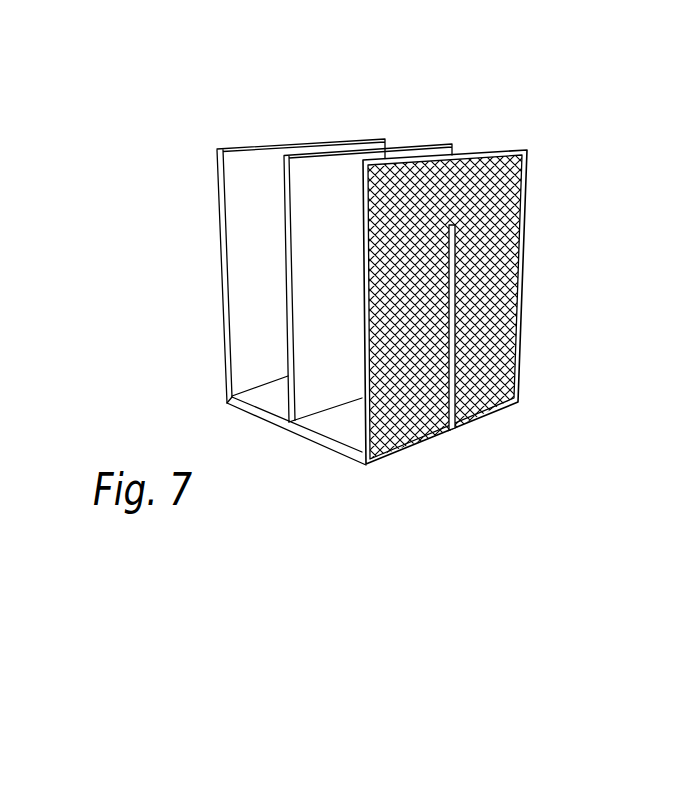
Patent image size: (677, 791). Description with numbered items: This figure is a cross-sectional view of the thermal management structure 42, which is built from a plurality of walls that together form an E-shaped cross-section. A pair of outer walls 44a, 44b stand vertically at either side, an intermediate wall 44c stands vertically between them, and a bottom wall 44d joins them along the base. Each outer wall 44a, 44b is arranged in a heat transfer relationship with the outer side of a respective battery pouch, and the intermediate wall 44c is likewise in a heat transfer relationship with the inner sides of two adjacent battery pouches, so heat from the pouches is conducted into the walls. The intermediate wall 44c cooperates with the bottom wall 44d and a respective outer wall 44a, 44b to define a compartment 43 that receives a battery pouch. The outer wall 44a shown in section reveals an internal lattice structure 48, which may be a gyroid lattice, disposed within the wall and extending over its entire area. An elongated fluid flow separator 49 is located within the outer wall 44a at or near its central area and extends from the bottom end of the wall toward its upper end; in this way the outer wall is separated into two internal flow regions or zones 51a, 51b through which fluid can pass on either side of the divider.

The thermal management structure 42 is at (303, 123).
The compartment 43 is at (250, 245).
The outer wall 44a is at (505, 313).
The outer wall 44b is at (255, 180).
The intermediate wall 44c is at (307, 287).
The bottom wall 44d is at (323, 440).
The lattice structure 48 is at (507, 313).
The fluid flow separator 49 is at (452, 325).
The internal flow region 51a is at (410, 400).
The internal flow region 51b is at (495, 272).